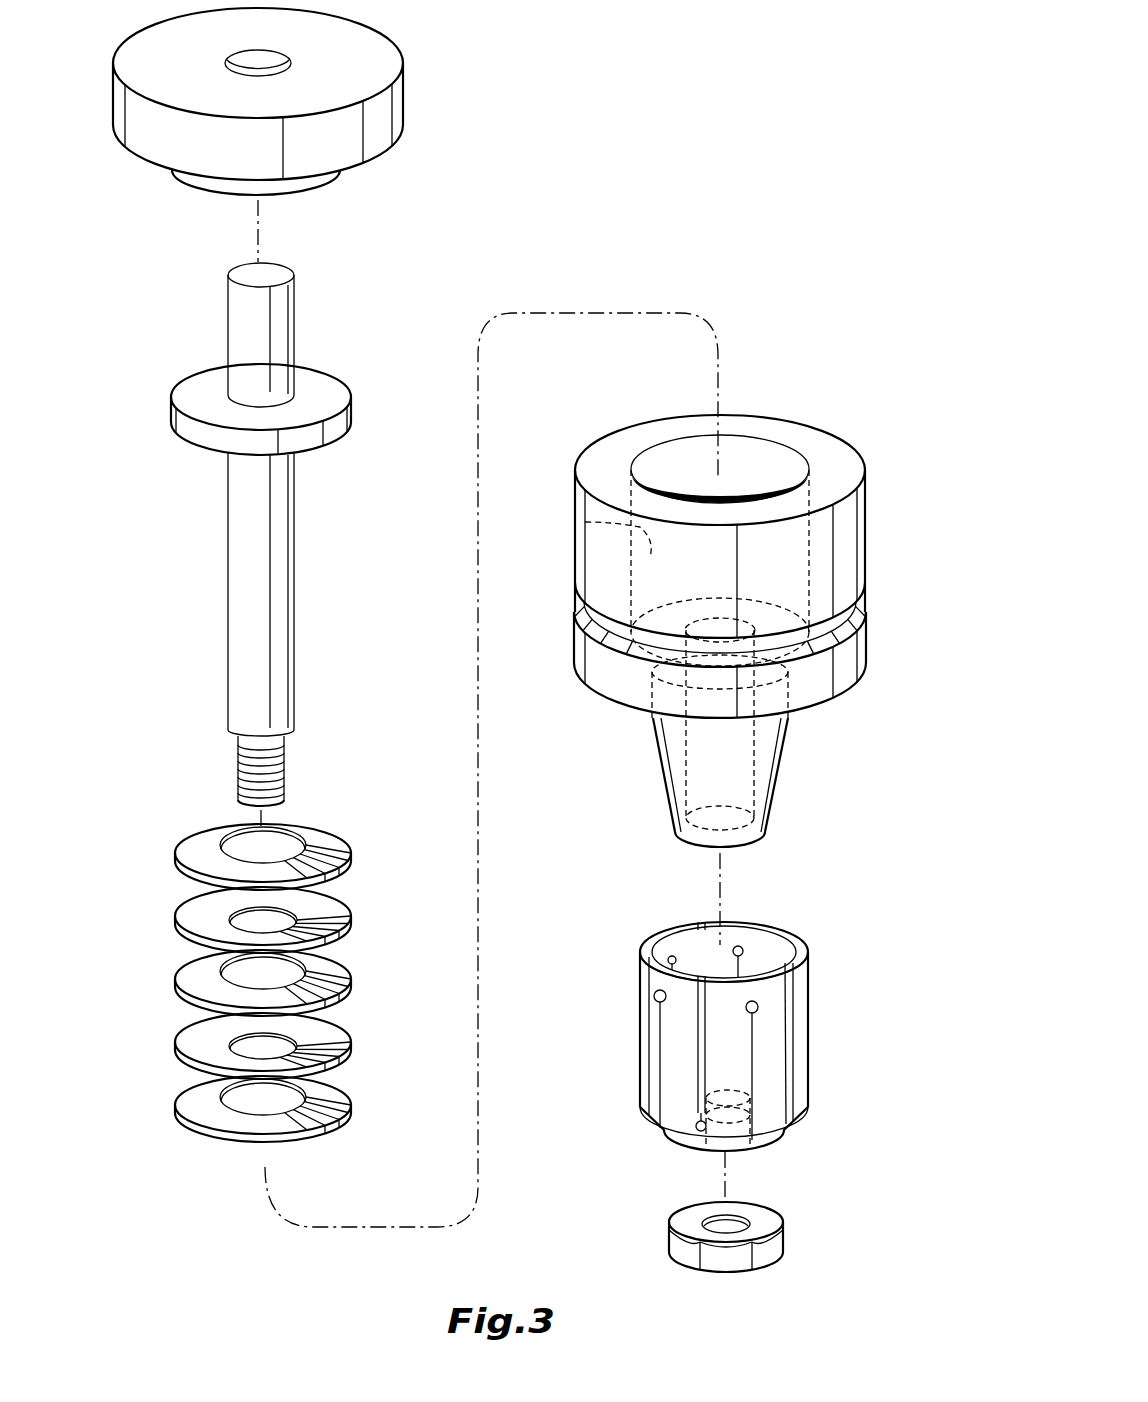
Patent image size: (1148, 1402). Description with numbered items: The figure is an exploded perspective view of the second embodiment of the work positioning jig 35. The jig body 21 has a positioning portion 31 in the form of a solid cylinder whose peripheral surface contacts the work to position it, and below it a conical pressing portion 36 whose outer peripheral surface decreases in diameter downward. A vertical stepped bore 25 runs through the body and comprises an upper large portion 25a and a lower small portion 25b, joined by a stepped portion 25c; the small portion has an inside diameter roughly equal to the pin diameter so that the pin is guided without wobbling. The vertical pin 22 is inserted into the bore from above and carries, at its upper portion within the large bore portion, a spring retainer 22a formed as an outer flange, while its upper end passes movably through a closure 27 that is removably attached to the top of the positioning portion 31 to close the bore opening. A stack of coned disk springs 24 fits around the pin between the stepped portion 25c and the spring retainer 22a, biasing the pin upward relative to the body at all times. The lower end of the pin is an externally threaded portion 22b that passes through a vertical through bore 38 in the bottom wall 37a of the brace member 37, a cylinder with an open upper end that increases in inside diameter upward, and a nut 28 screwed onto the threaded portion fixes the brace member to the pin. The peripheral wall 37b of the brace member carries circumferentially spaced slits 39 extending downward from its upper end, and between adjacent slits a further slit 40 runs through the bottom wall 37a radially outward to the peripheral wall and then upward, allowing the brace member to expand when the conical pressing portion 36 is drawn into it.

The jig body 21 is at (830, 433).
The vertical pin 22 is at (294, 340).
The spring retainer 22a is at (333, 430).
The externally threaded portion 22b is at (284, 760).
The coned disk springs 24 is at (347, 873).
The vertical stepped bore 25 is at (633, 470).
The upper large portion 25a is at (640, 527).
The lower small portion 25b is at (655, 757).
The stepped portion 25c is at (598, 598).
The closure 27 is at (400, 117).
The nut 28 is at (783, 1247).
The positioning portion 31 is at (825, 557).
The work positioning jig 35 is at (775, 370).
The conical pressing portion 36 is at (767, 763).
The brace member 37 is at (808, 1000).
The bottom wall 37a is at (735, 1150).
The peripheral wall 37b is at (806, 950).
The vertical through bore 38 is at (728, 1115).
The slits 39 is at (700, 1063).
The slit 40 is at (656, 1028).